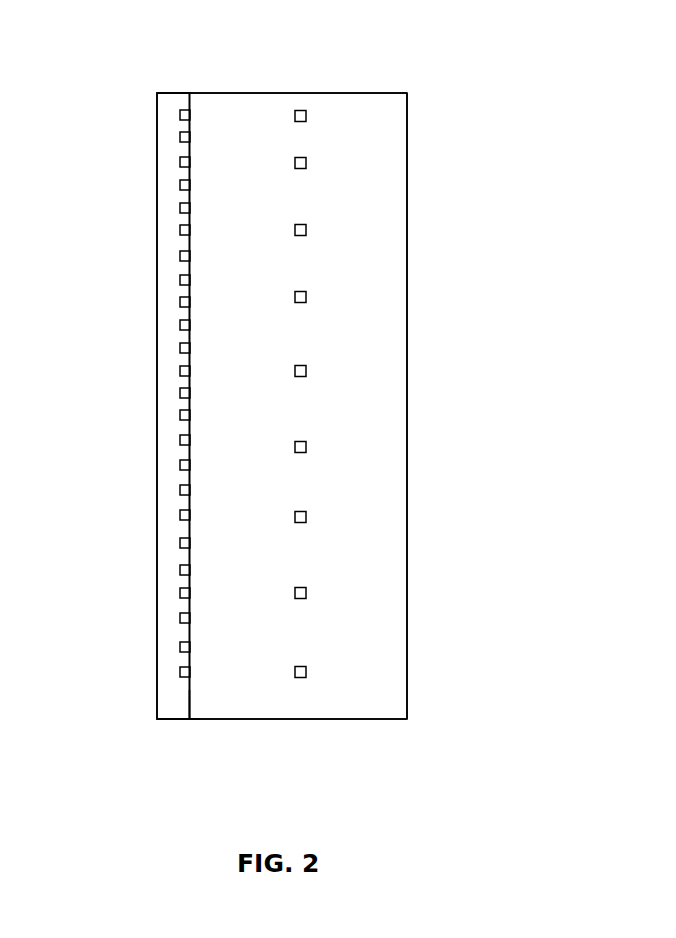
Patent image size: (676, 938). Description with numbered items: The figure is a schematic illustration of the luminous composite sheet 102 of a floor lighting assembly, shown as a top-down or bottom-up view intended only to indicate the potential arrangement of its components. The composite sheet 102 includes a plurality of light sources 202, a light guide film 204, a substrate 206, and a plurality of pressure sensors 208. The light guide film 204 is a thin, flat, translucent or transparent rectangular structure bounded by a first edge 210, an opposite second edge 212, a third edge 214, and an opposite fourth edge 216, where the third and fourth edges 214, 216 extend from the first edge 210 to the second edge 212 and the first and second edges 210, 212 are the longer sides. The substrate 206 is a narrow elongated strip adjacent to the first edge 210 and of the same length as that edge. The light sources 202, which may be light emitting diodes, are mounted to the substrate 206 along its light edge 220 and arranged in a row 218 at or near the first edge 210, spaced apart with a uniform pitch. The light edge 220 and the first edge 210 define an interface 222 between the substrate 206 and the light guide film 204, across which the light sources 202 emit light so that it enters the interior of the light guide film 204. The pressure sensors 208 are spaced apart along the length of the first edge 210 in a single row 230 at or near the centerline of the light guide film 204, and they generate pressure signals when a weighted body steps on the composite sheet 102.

The luminous composite sheet 102 is at (218, 73).
The light sources 202 is at (180, 618).
The light guide film 204 is at (344, 171).
The substrate 206 is at (170, 428).
The pressure sensors 208 is at (307, 297).
The first edge 210 is at (189, 688).
The second edge 212 is at (407, 638).
The third edge 214 is at (367, 720).
The fourth edge 216 is at (320, 93).
The row 218 is at (182, 101).
The light edge 220 is at (190, 703).
The interface 222 is at (189, 721).
The row 230 is at (301, 680).